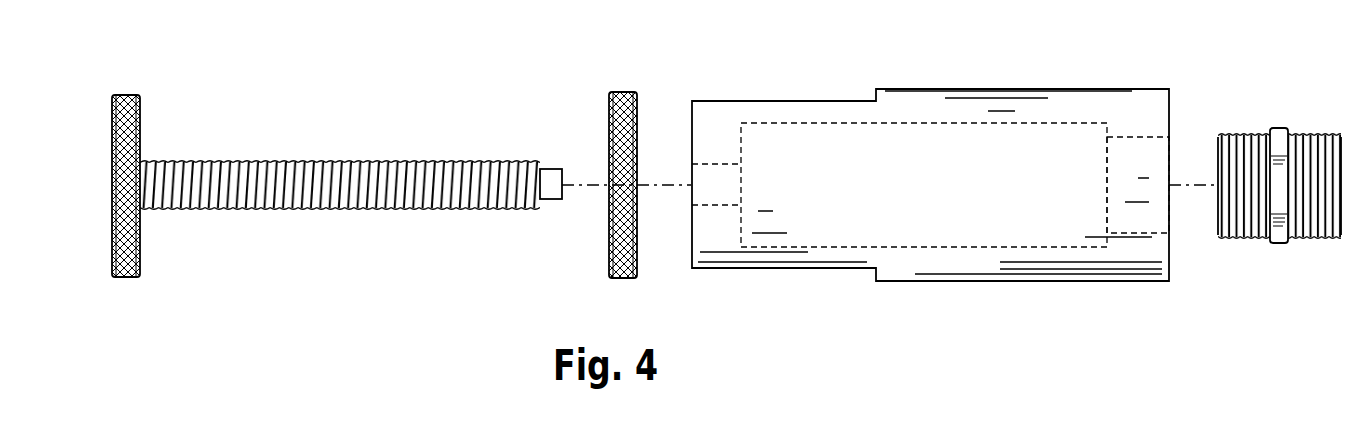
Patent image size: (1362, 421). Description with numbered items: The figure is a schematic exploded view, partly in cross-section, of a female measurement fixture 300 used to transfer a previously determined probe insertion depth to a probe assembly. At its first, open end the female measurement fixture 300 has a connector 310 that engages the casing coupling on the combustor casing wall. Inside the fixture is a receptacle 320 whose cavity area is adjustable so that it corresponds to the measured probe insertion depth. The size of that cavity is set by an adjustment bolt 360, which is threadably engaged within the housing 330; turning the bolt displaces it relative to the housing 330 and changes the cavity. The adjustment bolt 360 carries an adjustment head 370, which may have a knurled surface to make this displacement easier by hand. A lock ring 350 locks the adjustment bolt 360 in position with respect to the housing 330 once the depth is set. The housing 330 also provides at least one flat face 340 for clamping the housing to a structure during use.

The female measurement fixture 300 is at (930, 215).
The connector 310 is at (1290, 258).
The receptacle 320 is at (1000, 220).
The housing 330 is at (935, 260).
The flat face 340 is at (762, 90).
The lock ring 350 is at (625, 278).
The adjustment bolt 360 is at (250, 218).
The adjustment head 370 is at (124, 277).